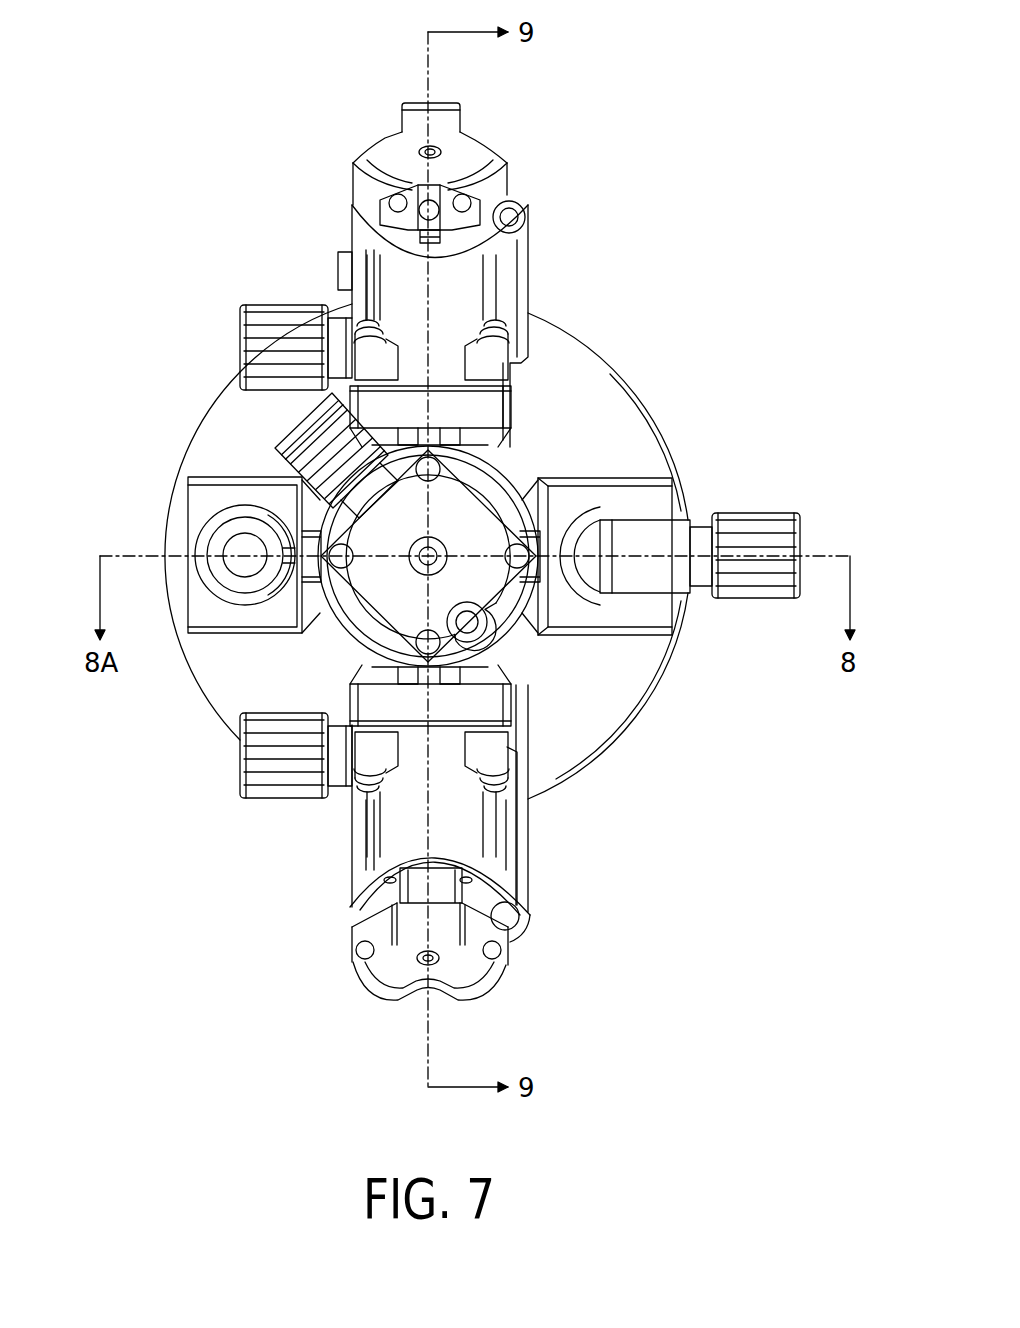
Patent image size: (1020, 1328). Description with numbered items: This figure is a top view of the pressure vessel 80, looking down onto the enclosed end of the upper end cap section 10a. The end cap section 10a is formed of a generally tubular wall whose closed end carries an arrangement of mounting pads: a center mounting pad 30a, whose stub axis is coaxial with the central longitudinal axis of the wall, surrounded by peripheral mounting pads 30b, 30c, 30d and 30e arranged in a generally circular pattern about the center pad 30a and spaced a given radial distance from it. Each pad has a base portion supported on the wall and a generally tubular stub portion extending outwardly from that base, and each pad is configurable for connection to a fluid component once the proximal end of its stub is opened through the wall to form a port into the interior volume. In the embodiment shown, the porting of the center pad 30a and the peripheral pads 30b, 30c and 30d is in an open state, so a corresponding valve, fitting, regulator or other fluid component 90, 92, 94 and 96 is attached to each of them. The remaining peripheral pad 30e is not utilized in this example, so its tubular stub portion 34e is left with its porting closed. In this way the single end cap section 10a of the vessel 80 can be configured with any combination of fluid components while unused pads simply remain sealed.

The pressure vessel 80 is at (800, 292).
The end cap section 10a is at (693, 418).
The center mounting pad 30a is at (515, 478).
The peripheral mounting pad 30b is at (507, 712).
The peripheral mounting pad 30c is at (667, 660).
The peripheral mounting pad 30d is at (512, 402).
The peripheral mounting pad 30e is at (217, 637).
The tubular stub portion 34e is at (228, 516).
The fluid component 90 is at (503, 593).
The fluid component 92 is at (528, 866).
The fluid component 94 is at (684, 500).
The fluid component 96 is at (535, 245).